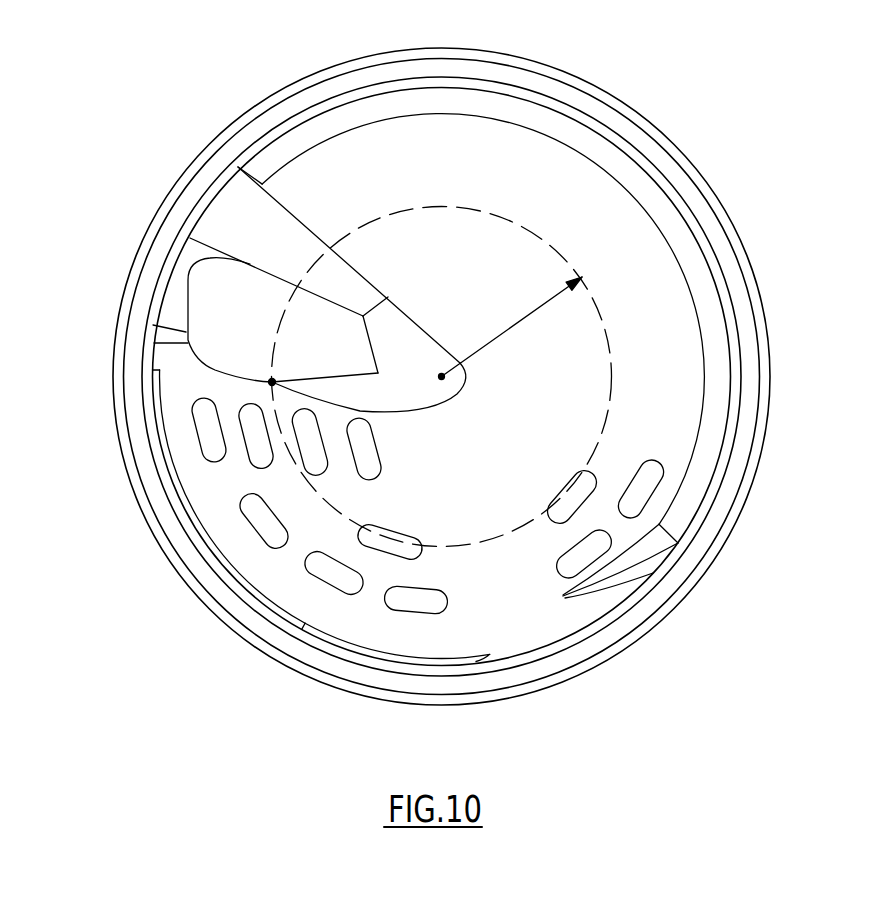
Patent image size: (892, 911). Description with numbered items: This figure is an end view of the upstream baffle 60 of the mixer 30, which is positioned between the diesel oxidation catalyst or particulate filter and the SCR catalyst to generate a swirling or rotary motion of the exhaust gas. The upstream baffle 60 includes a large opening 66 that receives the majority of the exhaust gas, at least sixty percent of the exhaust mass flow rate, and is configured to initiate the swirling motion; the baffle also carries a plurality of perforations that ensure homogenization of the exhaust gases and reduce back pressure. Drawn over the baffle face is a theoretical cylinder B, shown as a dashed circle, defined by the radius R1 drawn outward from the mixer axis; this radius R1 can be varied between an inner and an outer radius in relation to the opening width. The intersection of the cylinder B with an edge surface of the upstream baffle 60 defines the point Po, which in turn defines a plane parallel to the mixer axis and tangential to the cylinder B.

The mixer 30 is at (197, 131).
The upstream baffle 60 is at (453, 145).
The large opening 66 is at (221, 315).
The theoretical cylinder B is at (489, 210).
The radius R1 is at (487, 347).
The point Po is at (275, 379).